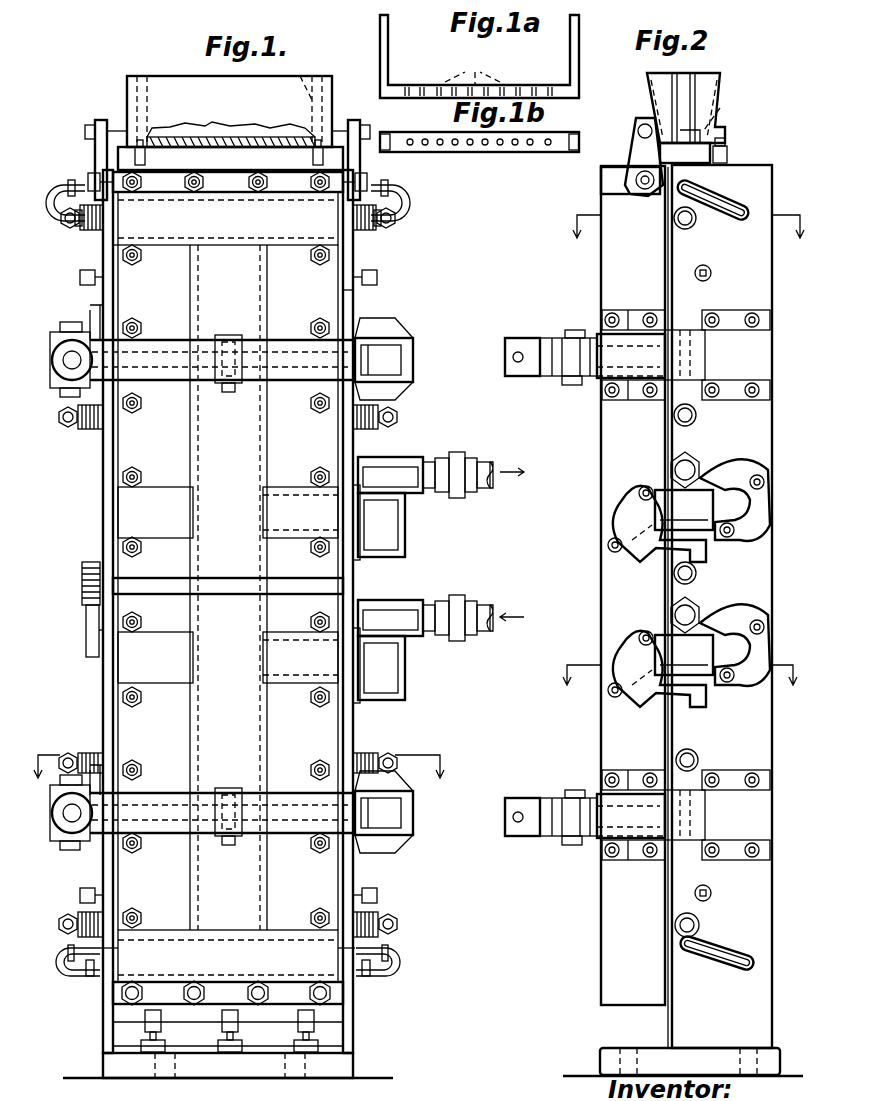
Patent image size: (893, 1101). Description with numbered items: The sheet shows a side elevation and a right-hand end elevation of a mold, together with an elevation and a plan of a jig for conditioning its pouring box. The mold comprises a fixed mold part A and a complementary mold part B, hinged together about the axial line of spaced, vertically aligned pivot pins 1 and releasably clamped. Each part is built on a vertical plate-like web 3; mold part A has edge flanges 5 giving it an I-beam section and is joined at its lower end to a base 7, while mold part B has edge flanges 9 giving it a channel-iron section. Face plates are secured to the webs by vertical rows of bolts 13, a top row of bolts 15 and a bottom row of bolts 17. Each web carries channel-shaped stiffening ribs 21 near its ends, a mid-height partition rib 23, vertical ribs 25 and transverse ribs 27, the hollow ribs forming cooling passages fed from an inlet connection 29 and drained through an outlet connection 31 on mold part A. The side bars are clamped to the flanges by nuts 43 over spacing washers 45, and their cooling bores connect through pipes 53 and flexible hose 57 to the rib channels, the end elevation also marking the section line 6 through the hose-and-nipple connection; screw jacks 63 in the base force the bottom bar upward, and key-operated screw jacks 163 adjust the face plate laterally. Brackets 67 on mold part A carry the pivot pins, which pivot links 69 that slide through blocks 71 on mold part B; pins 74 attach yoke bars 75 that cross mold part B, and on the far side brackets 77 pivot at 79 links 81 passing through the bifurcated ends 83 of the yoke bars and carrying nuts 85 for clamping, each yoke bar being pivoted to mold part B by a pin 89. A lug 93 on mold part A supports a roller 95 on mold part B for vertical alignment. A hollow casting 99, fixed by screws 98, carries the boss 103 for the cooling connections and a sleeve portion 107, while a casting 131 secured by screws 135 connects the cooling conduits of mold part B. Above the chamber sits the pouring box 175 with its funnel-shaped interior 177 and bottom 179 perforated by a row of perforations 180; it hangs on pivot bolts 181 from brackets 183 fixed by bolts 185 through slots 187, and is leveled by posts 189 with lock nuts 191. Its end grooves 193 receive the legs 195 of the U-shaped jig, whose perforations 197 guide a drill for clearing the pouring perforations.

In FIG. 2, the pivot pins 1 is at (700, 352).
In FIG. 1, the web 3 is at (118, 722).
In FIG. 1, the vertical flange 5 is at (237, 779).
In FIG. 2, the vertical flange 5 is at (772, 424).
In FIG. 2, the section line 6- 6 is at (687, 236).
In FIG. 1, the base 7 is at (190, 1058).
In FIG. 2, the base 7 is at (655, 1056).
In FIG. 1, the edge flanges 9 is at (103, 466).
In FIG. 2, the edge flanges 9 is at (601, 462).
In FIG. 1, the bolts 13 is at (318, 258).
In FIG. 1, the bolts 15 is at (178, 190).
In FIG. 2, the bolts 15 is at (688, 684).
In FIG. 1, the bolts 17 is at (138, 985).
In FIG. 1, the transverse stiffening rib 21 is at (172, 238).
In FIG. 1, the transverse partition rib 23 is at (226, 585).
In FIG. 1, the vertical ribs 25 is at (200, 288).
In FIG. 1, the transverse ribs 27 is at (158, 495).
In FIG. 1, the inlet connection 29 is at (490, 607).
In FIG. 2, the inlet connection 29 is at (694, 610).
In FIG. 1, the outlet connection 31 is at (490, 464).
In FIG. 2, the outlet connection 31 is at (694, 466).
In FIG. 1, the nuts 43 is at (390, 228).
In FIG. 2, the nuts 43 is at (696, 222).
In FIG. 1, the washers 45 is at (90, 230).
In FIG. 2, the washers 45 is at (688, 230).
In FIG. 1, the pipes 53 is at (90, 174).
In FIG. 1, the flexible hose 57 is at (58, 186).
In FIG. 2, the flexible hose 57 is at (725, 202).
In FIG. 1, the screw jacks 63 is at (145, 1030).
In FIG. 2, the brackets 67 is at (752, 366).
In FIG. 2, the links 69 is at (608, 372).
In FIG. 1, the blocks 71 is at (372, 324).
In FIG. 2, the blocks 71 is at (605, 337).
In FIG. 1, the pins 74 is at (404, 358).
In FIG. 2, the pins 74 is at (566, 332).
In FIG. 1, the yoke bars 75 is at (164, 342).
In FIG. 1, the brackets 77 is at (96, 312).
In FIG. 1, the pivot 79 is at (70, 322).
In FIG. 1, the links 81 is at (66, 372).
In FIG. 1, the bifurcated ends 83 is at (52, 344).
In FIG. 1, the nuts 85 is at (52, 360).
In FIG. 2, the nuts 85 is at (516, 345).
In FIG. 1, the pin 89 is at (228, 336).
In FIG. 1, the lug 93 is at (86, 630).
In FIG. 1, the roller 95 is at (82, 582).
In FIG. 2, the bolts or screws 98 is at (765, 482).
In FIG. 2, the hollow casting 99 is at (740, 480).
In FIG. 1, the hollow boss 103 is at (410, 458).
In FIG. 2, the sleeve portion 107 is at (666, 490).
In FIG. 1, the casting 131 is at (405, 546).
In FIG. 2, the casting 131 is at (620, 530).
In FIG. 2, the bolts or screws 135 is at (625, 542).
In FIG. 1, the key-operated screw jacks 163 is at (80, 282).
In FIG. 2, the key-operated screw jacks 163 is at (710, 268).
In FIG. 1, the pouring box 175 is at (172, 80).
In FIG. 2, the pouring box 175 is at (722, 76).
In FIG. 1, the funnel-shaped interior 177 is at (300, 78).
In FIG. 2, the funnel-shaped interior 177 is at (725, 88).
In FIG. 1, the bottom 179 is at (258, 128).
In FIG. 1, the perforations 180 is at (208, 125).
In FIG. 2, the perforations 180 is at (715, 132).
In FIG. 1, the pivot bolts 181 is at (87, 130).
In FIG. 2, the pivot bolts 181 is at (640, 125).
In FIG. 1, the brackets 183 is at (95, 146).
In FIG. 2, the brackets 183 is at (632, 140).
In FIG. 2, the bolts 185 is at (638, 174).
In FIG. 2, the slots 187 is at (636, 182).
In FIG. 1, the posts 189 is at (146, 157).
In FIG. 2, the posts 189 is at (728, 158).
In FIG. 1, the lock nuts 191 is at (135, 158).
In FIG. 2, the lock nuts 191 is at (728, 150).
In FIG. 1, the grooves 193 is at (127, 94).
In FIG. 2, the grooves 193 is at (655, 90).
In FIG. 1A, the legs 195 is at (380, 42).
In FIG. 1B, the legs 195 is at (388, 152).
In FIG. 1A, the perforations 197 is at (478, 78).
In FIG. 1B, the perforations 197 is at (440, 146).
In FIG. 2, the fixed mold part A is at (772, 290).
In FIG. 1, the complementary mold part B is at (356, 297).
In FIG. 2, the complementary mold part B is at (601, 262).